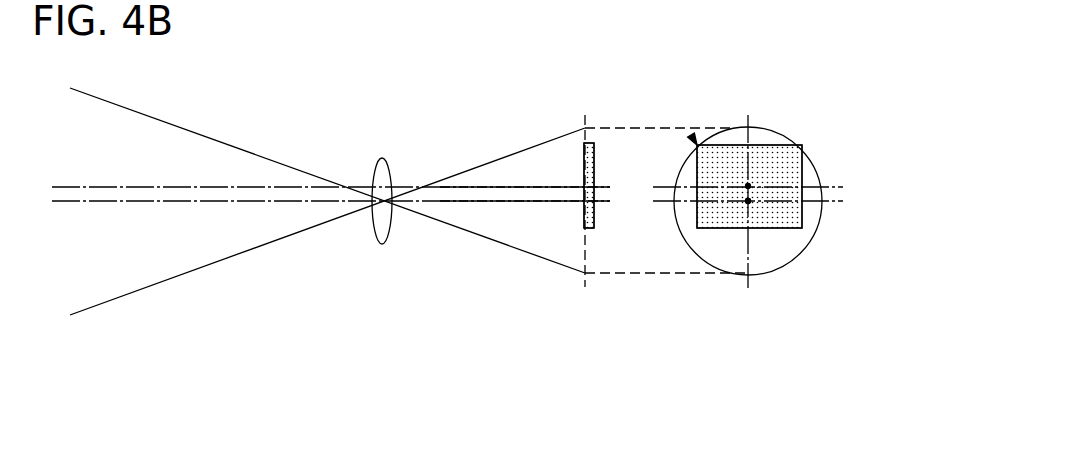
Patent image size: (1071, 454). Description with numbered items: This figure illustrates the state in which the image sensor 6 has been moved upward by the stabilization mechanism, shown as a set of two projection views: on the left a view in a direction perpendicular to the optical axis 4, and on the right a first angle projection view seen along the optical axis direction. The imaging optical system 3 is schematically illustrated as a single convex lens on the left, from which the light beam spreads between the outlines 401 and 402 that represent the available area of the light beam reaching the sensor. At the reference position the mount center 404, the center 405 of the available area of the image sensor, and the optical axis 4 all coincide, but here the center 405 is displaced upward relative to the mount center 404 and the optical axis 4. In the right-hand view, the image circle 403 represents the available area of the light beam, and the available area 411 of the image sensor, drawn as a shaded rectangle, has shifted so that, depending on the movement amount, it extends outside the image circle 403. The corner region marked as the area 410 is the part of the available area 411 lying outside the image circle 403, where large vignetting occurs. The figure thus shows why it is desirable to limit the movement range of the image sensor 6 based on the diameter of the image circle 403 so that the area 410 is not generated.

The imaging optical system 3 is at (382, 158).
The optical axis 4 is at (162, 200).
The image sensor 6 is at (590, 143).
The outline 401 is at (245, 152).
The outline 402 is at (245, 251).
The image circle 403 is at (767, 128).
The mount center 404 is at (480, 200).
The center of the available area of the image sensor 405 is at (480, 187).
The area 410 is at (690, 133).
The available area of the image sensor 411 is at (803, 170).